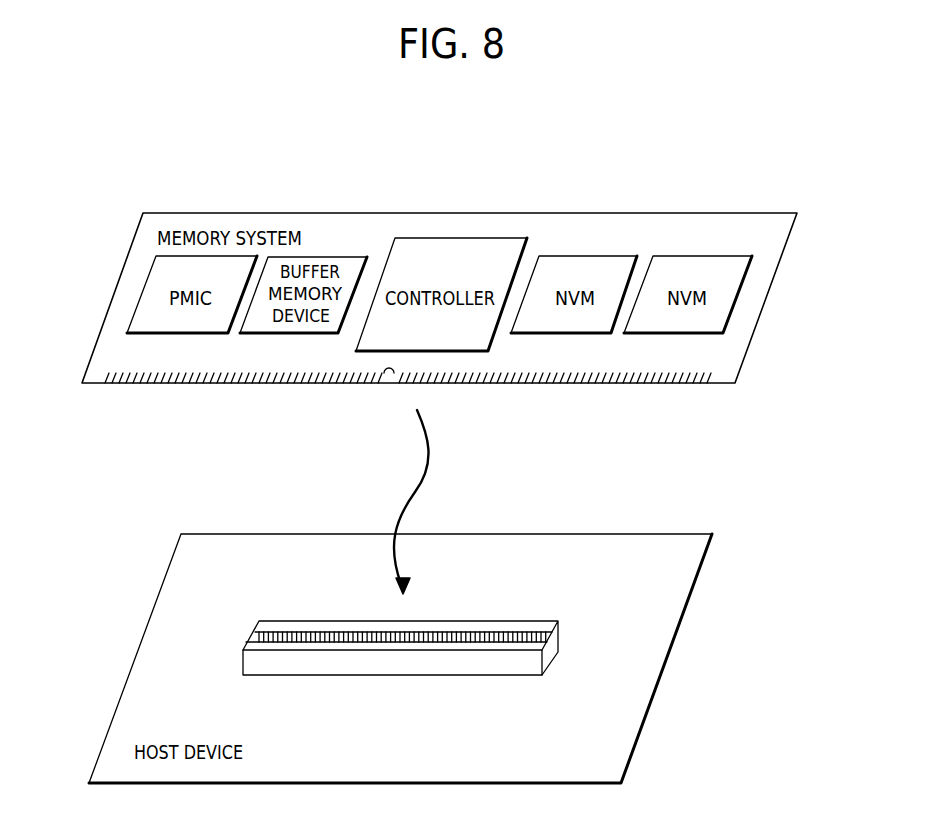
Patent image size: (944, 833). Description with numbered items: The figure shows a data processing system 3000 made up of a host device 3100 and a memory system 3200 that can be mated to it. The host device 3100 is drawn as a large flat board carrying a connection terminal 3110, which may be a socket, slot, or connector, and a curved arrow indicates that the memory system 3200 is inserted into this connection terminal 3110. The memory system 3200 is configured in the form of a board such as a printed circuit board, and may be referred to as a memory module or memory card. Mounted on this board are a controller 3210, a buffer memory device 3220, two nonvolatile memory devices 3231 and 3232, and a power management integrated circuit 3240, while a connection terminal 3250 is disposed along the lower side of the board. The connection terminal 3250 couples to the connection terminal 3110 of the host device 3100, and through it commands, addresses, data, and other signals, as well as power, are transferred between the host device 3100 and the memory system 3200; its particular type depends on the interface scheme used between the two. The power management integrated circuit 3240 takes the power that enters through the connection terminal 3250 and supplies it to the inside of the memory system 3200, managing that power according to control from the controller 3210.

The data processing system 3000 is at (89, 173).
The host device 3100 is at (427, 637).
The connection terminal 3110 is at (582, 617).
The memory system 3200 is at (450, 296).
The controller 3210 is at (495, 238).
The buffer memory device 3220 is at (323, 256).
The nonvolatile memory device 3231 is at (595, 256).
The nonvolatile memory device 3232 is at (707, 256).
The power management integrated circuit 3240 is at (146, 283).
The connection terminal 3250 is at (125, 387).